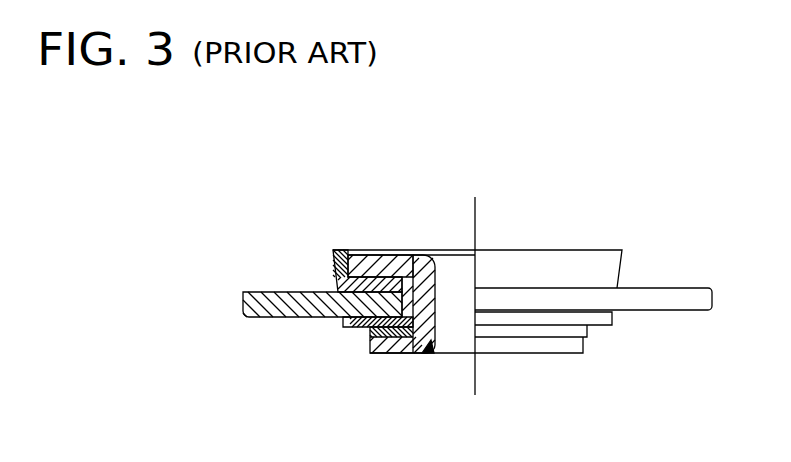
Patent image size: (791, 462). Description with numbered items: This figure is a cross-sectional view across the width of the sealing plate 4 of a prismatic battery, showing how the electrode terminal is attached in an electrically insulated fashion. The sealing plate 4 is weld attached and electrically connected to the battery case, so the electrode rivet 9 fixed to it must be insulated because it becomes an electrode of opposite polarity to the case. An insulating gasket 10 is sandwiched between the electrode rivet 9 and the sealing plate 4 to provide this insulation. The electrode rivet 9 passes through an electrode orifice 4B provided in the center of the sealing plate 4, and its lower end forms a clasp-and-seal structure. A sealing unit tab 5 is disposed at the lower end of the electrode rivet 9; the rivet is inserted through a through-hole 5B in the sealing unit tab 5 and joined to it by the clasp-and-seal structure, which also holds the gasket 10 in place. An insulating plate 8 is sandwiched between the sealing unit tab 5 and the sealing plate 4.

The sealing plate 4 is at (253, 300).
The electrode orifice 4B is at (462, 287).
The sealing unit tab 5 is at (369, 332).
The through-hole 5B is at (427, 343).
The insulating plate 8 is at (343, 319).
The electrode rivet 9 is at (380, 262).
The insulating gasket 10 is at (332, 260).